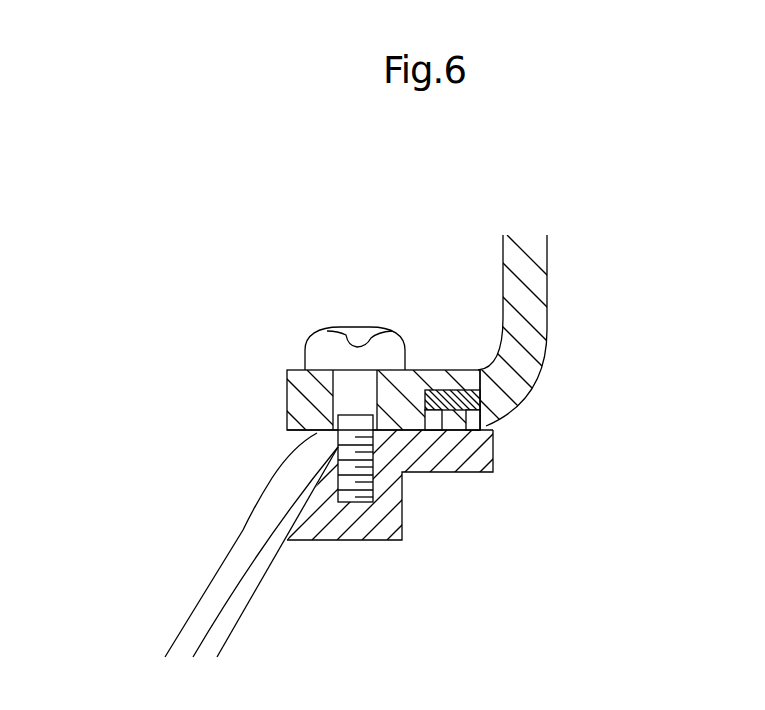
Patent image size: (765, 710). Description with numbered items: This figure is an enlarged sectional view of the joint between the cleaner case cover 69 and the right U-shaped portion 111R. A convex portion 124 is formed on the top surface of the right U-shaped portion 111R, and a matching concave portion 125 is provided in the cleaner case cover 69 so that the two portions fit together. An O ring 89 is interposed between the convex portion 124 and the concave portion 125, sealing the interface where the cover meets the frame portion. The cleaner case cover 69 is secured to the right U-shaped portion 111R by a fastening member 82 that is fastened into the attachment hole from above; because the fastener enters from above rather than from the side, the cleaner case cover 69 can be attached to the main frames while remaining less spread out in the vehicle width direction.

The fastening member 82 is at (335, 351).
The convex portion 124 is at (451, 391).
The concave portion 125 is at (476, 391).
The cleaner case cover 69 is at (530, 305).
The O ring 89 is at (481, 405).
The right U-shaped portion 111R is at (240, 530).